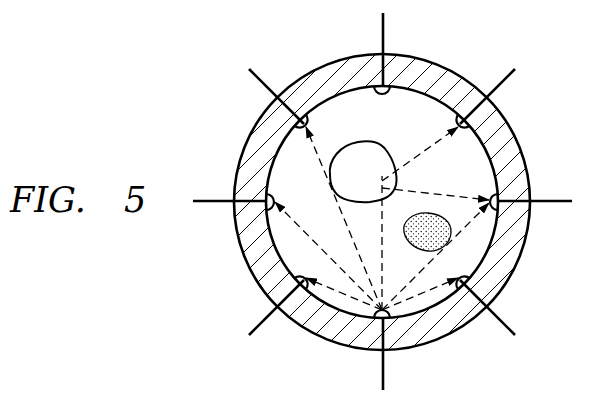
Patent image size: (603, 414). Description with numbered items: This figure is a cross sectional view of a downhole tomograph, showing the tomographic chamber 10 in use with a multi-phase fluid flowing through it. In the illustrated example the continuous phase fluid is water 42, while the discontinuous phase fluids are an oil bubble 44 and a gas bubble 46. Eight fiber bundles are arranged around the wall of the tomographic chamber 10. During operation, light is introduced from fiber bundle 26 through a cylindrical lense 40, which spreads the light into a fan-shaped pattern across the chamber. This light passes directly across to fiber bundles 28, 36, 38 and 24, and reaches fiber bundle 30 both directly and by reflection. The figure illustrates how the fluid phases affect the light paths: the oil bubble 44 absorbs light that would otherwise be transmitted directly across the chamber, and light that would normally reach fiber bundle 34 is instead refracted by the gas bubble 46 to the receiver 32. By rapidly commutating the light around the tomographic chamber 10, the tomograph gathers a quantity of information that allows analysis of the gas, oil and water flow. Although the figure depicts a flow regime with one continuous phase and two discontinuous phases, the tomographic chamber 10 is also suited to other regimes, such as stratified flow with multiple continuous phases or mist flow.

The tomographic chamber 10 is at (252, 246).
The fiber bundle 24 is at (256, 328).
The fiber bundle 26 is at (383, 375).
The fiber bundle 28 is at (508, 328).
The fiber bundle 30 is at (553, 202).
The receiver 32 is at (497, 88).
The fiber bundle 34 is at (384, 30).
The fiber bundle 36 is at (273, 93).
The fiber bundle 38 is at (213, 200).
The cylindrical lense 40 is at (392, 320).
The water 42 is at (307, 228).
The oil bubble 44 is at (433, 215).
The gas bubble 46 is at (386, 150).